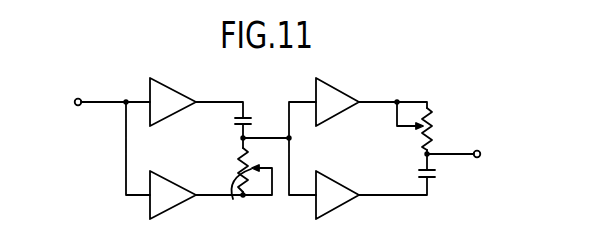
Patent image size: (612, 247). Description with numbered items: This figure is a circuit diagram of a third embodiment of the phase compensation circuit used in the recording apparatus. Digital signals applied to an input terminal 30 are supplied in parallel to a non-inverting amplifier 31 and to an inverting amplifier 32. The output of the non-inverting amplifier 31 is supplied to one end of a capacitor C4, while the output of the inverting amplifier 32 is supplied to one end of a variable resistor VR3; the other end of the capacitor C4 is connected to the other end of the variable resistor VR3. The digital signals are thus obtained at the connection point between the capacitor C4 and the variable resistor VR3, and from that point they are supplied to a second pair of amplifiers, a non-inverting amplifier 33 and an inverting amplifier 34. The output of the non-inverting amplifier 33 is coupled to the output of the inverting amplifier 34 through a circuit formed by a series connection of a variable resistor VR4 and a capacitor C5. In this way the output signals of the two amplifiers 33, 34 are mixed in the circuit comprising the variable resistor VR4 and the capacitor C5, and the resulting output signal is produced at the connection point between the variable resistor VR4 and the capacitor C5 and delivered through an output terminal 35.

The input terminal 30 is at (78, 97).
The non-inverting amplifier 31 is at (172, 87).
The inverting amplifier 32 is at (170, 181).
The non-inverting amplifier 33 is at (340, 87).
The inverting amplifier 34 is at (338, 180).
The output terminal 35 is at (477, 149).
The capacitor C4 is at (228, 123).
The capacitor C5 is at (440, 179).
The variable resistor VR3 is at (246, 187).
The variable resistor VR4 is at (407, 128).